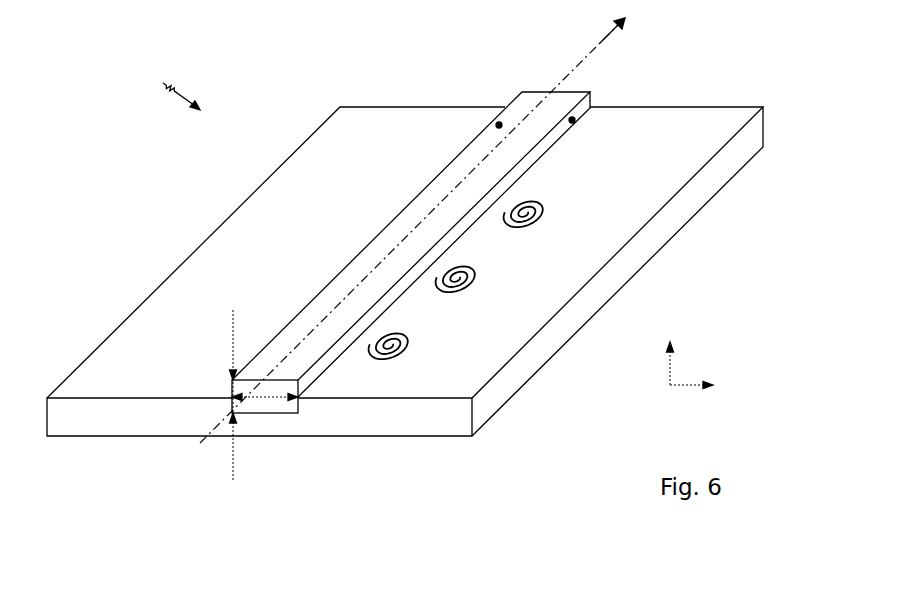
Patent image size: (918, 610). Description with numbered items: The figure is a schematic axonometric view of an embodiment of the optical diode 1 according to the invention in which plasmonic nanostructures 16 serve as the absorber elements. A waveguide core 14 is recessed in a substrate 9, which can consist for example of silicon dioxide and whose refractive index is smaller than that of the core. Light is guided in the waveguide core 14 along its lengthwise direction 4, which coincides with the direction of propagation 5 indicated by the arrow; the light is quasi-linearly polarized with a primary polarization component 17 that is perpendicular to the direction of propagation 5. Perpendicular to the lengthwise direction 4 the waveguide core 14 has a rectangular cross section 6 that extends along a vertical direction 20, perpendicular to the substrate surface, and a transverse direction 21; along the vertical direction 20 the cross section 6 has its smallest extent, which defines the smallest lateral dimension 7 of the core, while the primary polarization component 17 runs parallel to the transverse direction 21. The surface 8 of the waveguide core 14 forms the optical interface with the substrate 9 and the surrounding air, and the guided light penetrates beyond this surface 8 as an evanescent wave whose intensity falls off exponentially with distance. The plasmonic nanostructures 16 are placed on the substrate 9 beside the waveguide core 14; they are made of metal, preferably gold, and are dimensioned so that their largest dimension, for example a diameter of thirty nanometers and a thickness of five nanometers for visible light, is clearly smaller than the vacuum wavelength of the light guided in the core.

The optical diode 1 is at (172, 85).
The lengthwise direction 4 is at (578, 66).
The direction of propagation 5 is at (605, 36).
The rectangular cross section 6 is at (270, 408).
The smallest lateral dimension 7 is at (240, 458).
The surface 8 is at (499, 125).
The substrate 9 is at (251, 254).
The waveguide core 14 is at (424, 188).
The plasmonic nanostructures 16 is at (546, 203).
The primary polarization component 17 is at (302, 411).
The vertical direction 20 is at (670, 349).
The transverse direction 21 is at (709, 385).